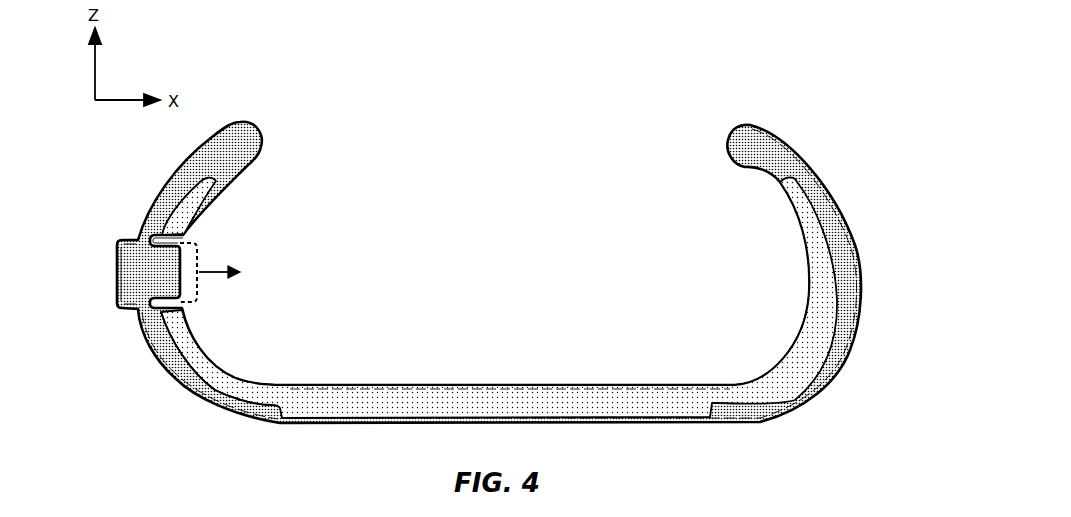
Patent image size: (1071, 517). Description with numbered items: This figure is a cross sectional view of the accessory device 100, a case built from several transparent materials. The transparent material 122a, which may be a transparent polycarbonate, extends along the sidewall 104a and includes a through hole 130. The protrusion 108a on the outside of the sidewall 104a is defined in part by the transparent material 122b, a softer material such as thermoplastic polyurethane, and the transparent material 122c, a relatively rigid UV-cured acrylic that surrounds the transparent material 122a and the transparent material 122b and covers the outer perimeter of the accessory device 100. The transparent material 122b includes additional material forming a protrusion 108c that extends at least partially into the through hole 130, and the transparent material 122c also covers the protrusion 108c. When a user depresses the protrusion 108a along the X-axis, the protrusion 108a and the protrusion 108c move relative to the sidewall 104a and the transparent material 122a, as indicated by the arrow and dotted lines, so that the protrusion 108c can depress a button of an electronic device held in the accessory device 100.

The accessory device 100 is at (873, 135).
The sidewall 104a is at (144, 396).
The protrusion 108a is at (106, 226).
The protrusion 108c is at (178, 290).
The transparent material 122a is at (712, 422).
The transparent material 122b is at (233, 128).
The transparent material 122c is at (138, 333).
The through hole 130 is at (207, 235).